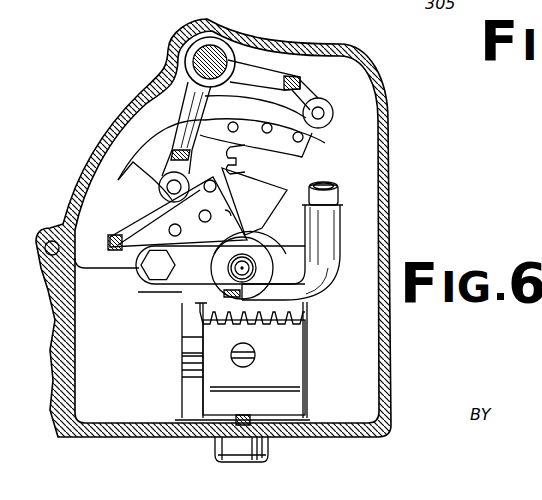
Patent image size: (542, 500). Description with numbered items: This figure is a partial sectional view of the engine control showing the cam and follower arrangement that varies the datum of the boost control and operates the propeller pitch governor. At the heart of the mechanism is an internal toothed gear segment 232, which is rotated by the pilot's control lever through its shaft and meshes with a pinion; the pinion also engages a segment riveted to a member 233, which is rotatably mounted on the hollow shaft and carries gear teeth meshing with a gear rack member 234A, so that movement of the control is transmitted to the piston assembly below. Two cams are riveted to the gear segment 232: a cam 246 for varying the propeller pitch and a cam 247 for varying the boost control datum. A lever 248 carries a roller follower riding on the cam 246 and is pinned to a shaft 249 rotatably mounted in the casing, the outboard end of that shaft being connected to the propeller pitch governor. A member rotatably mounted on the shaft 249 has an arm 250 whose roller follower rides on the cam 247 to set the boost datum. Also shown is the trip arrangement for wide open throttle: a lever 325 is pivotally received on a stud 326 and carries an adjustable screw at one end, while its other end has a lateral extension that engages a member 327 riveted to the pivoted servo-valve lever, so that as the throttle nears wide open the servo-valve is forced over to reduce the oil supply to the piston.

The gear segment 232 is at (300, 157).
The member 233 is at (203, 337).
The gear rack member 234A is at (288, 343).
The cam 246 is at (267, 110).
The cam 247 is at (110, 240).
The lever 248 is at (275, 66).
The shaft 249 is at (228, 46).
The arm 250 is at (180, 127).
The lever 325 is at (325, 237).
The stud 326 is at (358, 170).
The member 327 is at (226, 294).